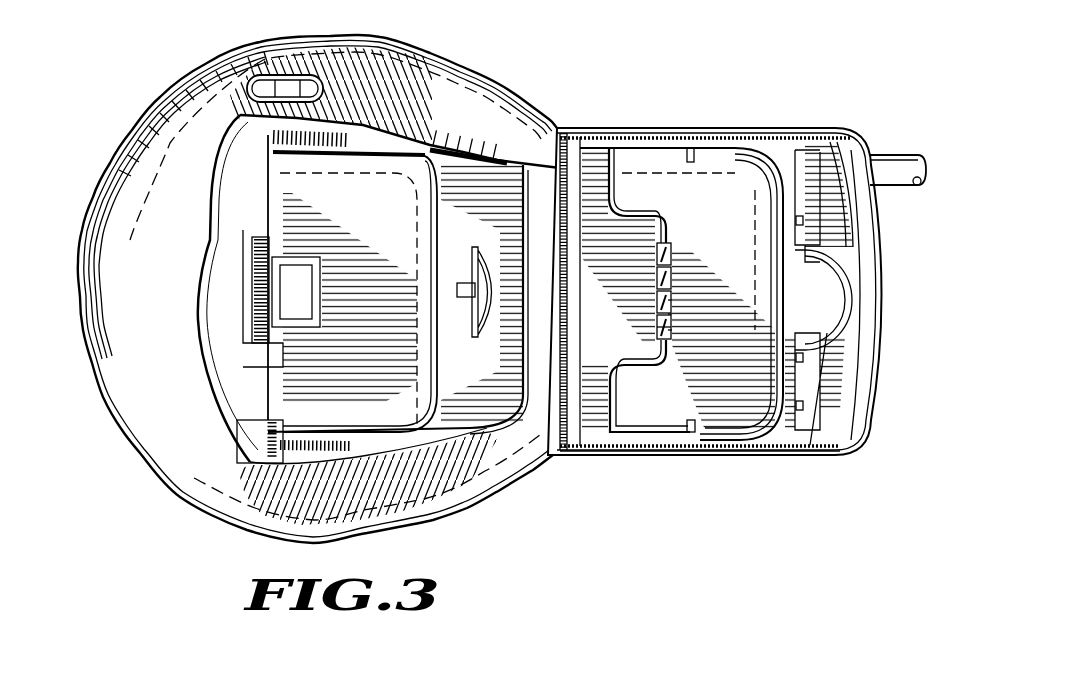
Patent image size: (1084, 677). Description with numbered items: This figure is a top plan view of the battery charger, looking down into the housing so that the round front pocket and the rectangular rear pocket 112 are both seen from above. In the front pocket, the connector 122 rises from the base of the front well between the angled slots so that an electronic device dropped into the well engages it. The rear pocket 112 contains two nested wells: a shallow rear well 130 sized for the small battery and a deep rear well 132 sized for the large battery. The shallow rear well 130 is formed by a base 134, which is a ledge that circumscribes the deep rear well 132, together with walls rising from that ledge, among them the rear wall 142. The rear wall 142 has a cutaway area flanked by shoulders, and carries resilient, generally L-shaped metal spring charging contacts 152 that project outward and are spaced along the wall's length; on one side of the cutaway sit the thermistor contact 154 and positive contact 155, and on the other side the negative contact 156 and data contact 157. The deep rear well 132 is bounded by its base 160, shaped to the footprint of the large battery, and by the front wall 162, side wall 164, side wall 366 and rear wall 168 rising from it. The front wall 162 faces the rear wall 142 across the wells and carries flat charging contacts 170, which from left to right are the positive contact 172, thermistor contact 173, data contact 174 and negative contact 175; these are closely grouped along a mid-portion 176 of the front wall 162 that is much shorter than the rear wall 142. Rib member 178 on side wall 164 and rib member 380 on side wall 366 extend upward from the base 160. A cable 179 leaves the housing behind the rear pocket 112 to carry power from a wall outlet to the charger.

The rear pocket 112 is at (600, 478).
The connector 122 is at (260, 345).
The shallow rear well 130 is at (790, 428).
The deep rear well 132 is at (742, 170).
The base 134 is at (782, 152).
The rear wall 142 is at (805, 250).
The charging contacts 152 is at (835, 361).
The thermistor contact 154 is at (800, 143).
The positive contact 155 is at (805, 220).
The negative contact 156 is at (803, 358).
The data contact 157 is at (803, 406).
The base 160 is at (627, 190).
The front wall 162 is at (618, 405).
The side wall 164 is at (637, 143).
The rear wall 168 is at (765, 425).
The charging contacts 170 is at (593, 350).
The positive contact 172 is at (655, 245).
The thermistor contact 173 is at (668, 318).
The data contact 174 is at (670, 318).
The negative contact 175 is at (660, 327).
The mid-portion 176 is at (690, 432).
The rib member 178 is at (690, 158).
The cable 179 is at (883, 167).
The side wall 366 is at (650, 432).
The rib member 380 is at (672, 335).